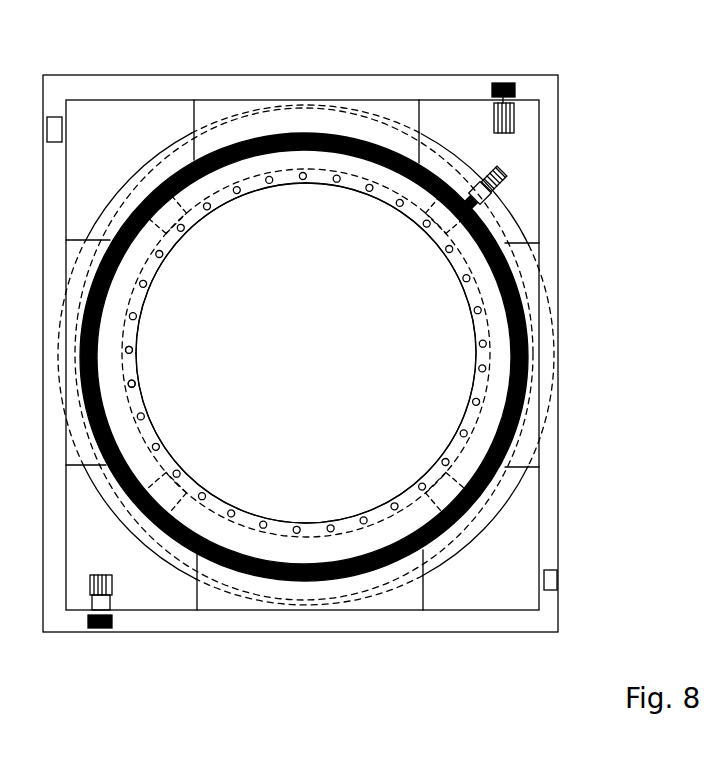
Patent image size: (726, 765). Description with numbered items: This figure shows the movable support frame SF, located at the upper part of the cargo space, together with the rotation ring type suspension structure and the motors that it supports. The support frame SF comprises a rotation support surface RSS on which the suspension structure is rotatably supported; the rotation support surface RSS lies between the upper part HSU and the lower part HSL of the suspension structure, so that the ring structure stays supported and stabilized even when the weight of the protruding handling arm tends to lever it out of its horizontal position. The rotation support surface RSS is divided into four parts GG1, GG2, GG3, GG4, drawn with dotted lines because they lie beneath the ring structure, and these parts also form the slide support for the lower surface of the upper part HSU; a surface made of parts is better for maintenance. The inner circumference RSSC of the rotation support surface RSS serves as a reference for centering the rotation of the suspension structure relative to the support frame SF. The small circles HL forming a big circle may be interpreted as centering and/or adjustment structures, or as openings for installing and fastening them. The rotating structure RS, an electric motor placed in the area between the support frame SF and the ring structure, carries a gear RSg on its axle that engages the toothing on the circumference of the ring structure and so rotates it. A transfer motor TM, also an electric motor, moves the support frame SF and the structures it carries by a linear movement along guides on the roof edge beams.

The support frame SF is at (462, 78).
The transfer motor TM is at (512, 108).
The rotating structure RS is at (507, 203).
The gear RSg is at (514, 272).
The rotation support surface RSS is at (305, 181).
The inner circumference of the rotation support surface RSSC is at (136, 294).
The lower part of the suspension structure HSL is at (306, 353).
The upper part of the suspension structure HSU is at (178, 470).
The small circles HL is at (134, 387).
The first part of the rotation support surface GG1 is at (163, 443).
The second part of the rotation support surface GG2 is at (265, 172).
The third part of the rotation support surface GG3 is at (503, 330).
The fourth part of the rotation support surface GG4 is at (268, 546).